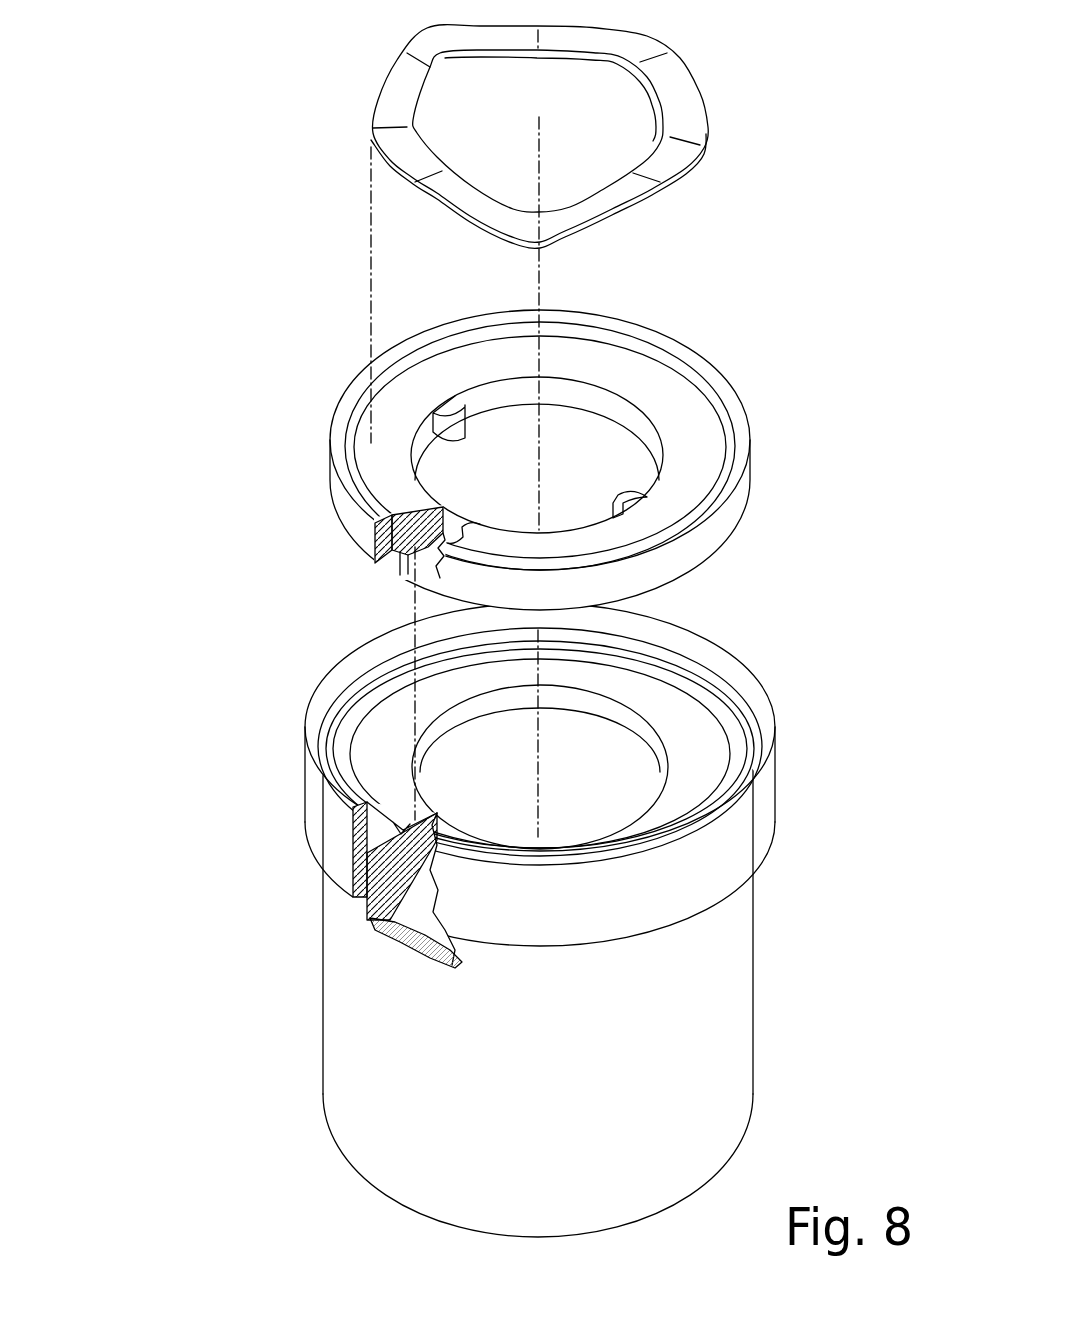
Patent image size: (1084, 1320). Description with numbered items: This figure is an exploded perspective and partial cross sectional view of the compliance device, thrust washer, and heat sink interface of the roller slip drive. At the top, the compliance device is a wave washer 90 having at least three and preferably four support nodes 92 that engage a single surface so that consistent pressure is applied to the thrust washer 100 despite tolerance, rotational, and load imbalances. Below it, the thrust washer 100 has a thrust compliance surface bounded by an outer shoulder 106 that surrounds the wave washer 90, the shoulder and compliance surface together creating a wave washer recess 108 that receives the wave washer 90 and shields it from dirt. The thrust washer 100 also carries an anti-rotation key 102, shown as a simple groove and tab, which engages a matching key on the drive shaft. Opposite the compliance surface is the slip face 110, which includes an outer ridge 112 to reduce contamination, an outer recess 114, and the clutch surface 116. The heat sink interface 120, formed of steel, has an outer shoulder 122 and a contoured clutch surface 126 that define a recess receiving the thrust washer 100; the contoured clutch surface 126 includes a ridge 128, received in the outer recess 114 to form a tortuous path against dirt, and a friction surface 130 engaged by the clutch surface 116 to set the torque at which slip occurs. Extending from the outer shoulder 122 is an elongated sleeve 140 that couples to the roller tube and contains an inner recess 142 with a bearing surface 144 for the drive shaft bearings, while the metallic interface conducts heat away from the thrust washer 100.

The wave washer 90 is at (585, 129).
The support nodes 92 is at (423, 48).
The thrust washer 100 is at (579, 473).
The anti-rotation key 102 is at (627, 500).
The outer shoulder 106 is at (614, 338).
The wave washer recess 108 is at (655, 392).
The slip face 110 is at (457, 540).
The outer ridge 112 is at (382, 562).
The outer recess 114 is at (400, 548).
The clutch surface 116 is at (427, 567).
The heat sink interface 120 is at (463, 892).
The outer shoulder 122 is at (680, 626).
The contoured clutch surface 126 is at (358, 765).
The ridge 128 is at (395, 793).
The friction surface 130 is at (683, 745).
The elongated sleeve 140 is at (366, 1030).
The inner recess 142 is at (430, 899).
The bearing surface 144 is at (575, 792).